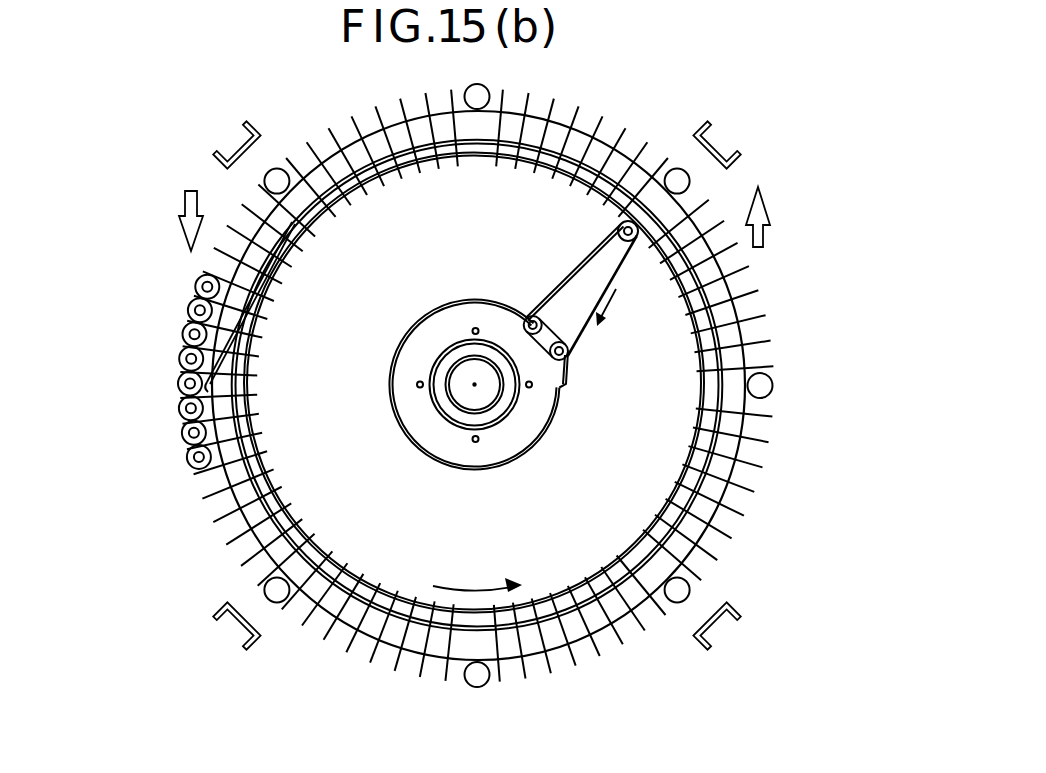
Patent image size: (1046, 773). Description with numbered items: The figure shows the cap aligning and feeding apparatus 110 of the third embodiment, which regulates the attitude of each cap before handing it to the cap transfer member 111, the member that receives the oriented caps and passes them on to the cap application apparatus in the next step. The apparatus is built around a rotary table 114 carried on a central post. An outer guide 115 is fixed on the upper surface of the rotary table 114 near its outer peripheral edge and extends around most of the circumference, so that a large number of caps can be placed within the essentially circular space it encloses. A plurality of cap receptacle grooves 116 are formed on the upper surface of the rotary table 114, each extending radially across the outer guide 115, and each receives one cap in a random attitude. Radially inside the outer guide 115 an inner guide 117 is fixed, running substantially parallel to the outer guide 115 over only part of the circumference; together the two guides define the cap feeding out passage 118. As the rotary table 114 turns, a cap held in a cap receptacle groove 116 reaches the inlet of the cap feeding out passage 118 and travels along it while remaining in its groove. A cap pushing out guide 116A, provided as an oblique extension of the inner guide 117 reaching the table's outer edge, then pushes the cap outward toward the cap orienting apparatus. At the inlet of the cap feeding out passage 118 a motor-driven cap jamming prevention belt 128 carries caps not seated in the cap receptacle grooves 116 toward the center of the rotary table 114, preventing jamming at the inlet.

The cap aligning and feeding apparatus 110 is at (613, 124).
The cap transfer member 111 is at (186, 311).
The rotary table 114 is at (748, 298).
The outer guide 115 is at (748, 438).
The cap receptacle grooves 116 is at (248, 292).
The cap pushing out guide 116A is at (184, 370).
The inner guide 117 is at (528, 176).
The cap feeding out passage 118 is at (584, 186).
The cap jamming prevention belt 128 is at (614, 283).